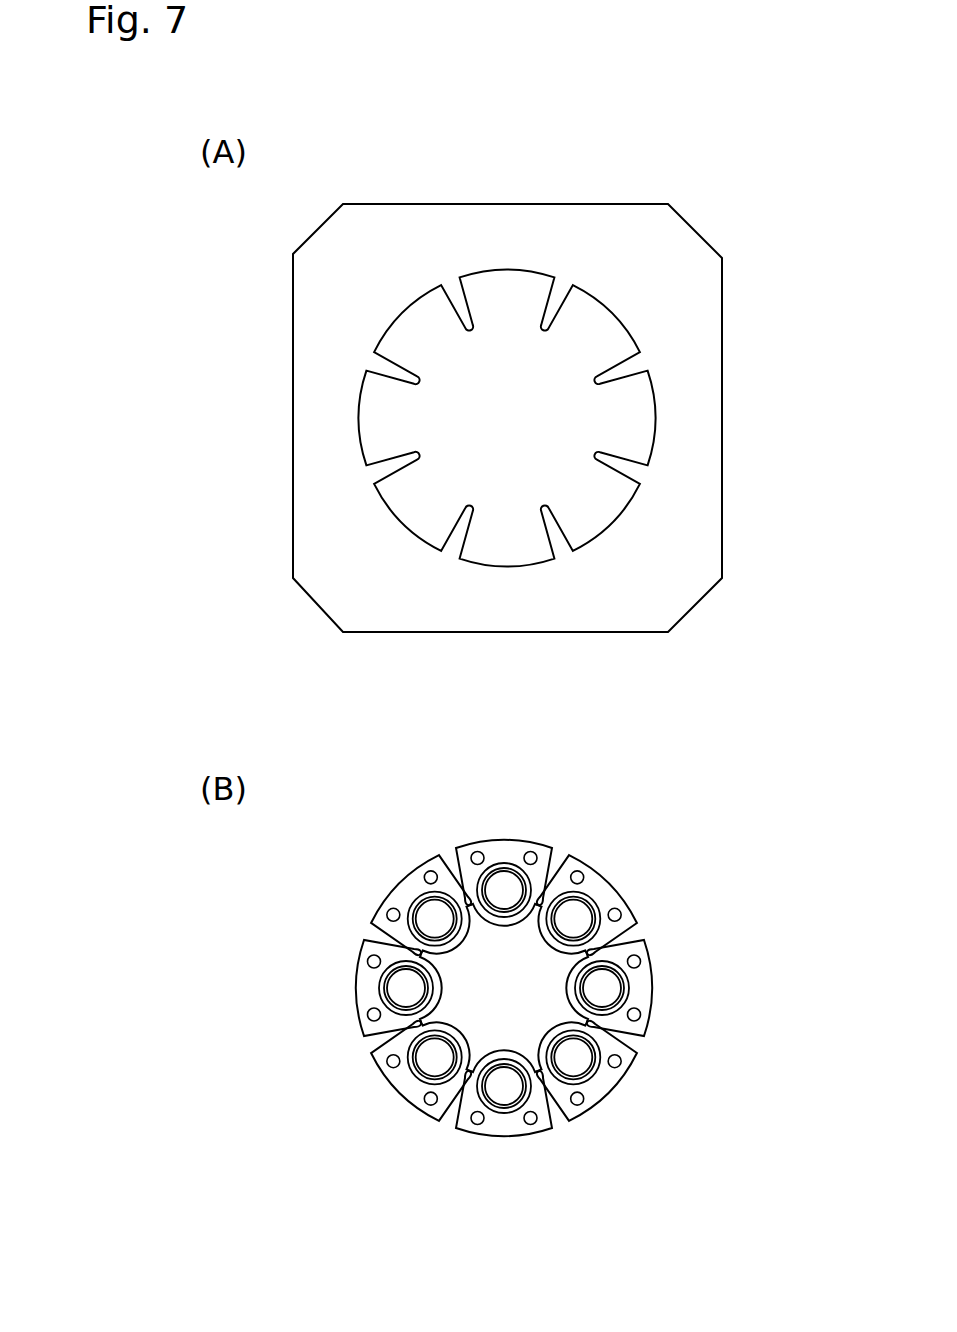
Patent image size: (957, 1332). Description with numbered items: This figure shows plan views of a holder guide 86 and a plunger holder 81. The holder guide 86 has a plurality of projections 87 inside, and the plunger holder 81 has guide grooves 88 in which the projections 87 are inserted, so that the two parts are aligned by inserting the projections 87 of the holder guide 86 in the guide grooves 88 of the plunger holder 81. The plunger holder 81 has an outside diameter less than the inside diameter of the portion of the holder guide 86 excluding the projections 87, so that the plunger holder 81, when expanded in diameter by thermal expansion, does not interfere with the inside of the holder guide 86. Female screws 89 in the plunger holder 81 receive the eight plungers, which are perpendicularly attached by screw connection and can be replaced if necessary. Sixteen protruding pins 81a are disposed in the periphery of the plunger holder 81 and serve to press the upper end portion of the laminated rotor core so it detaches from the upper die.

The holder guide 86 is at (695, 233).
The projections 87 is at (552, 312).
The plunger holder 81 is at (612, 881).
The protruding pins 81a is at (528, 856).
The guide grooves 88 is at (603, 943).
The female screws 89 is at (423, 990).